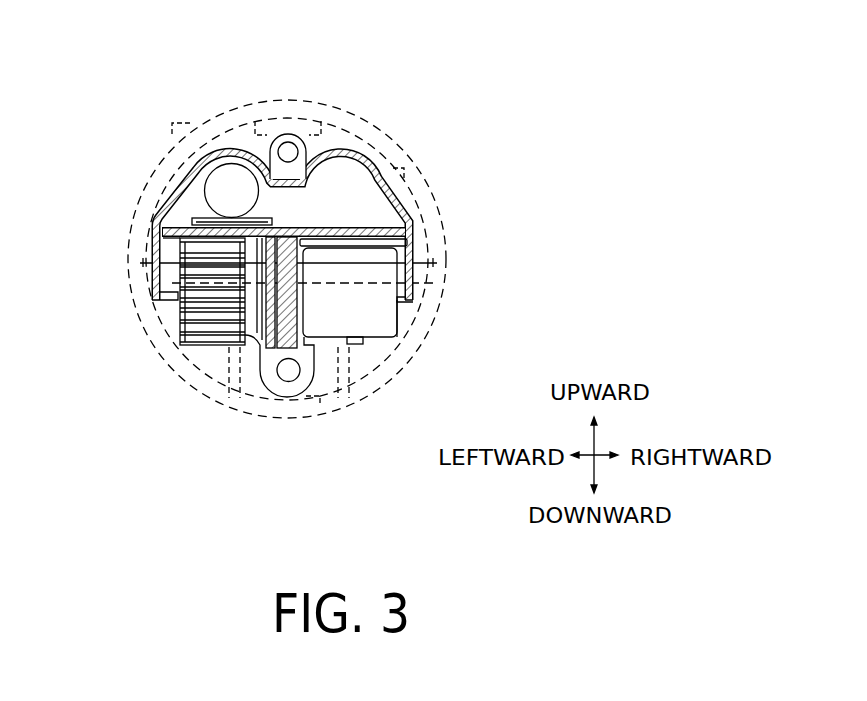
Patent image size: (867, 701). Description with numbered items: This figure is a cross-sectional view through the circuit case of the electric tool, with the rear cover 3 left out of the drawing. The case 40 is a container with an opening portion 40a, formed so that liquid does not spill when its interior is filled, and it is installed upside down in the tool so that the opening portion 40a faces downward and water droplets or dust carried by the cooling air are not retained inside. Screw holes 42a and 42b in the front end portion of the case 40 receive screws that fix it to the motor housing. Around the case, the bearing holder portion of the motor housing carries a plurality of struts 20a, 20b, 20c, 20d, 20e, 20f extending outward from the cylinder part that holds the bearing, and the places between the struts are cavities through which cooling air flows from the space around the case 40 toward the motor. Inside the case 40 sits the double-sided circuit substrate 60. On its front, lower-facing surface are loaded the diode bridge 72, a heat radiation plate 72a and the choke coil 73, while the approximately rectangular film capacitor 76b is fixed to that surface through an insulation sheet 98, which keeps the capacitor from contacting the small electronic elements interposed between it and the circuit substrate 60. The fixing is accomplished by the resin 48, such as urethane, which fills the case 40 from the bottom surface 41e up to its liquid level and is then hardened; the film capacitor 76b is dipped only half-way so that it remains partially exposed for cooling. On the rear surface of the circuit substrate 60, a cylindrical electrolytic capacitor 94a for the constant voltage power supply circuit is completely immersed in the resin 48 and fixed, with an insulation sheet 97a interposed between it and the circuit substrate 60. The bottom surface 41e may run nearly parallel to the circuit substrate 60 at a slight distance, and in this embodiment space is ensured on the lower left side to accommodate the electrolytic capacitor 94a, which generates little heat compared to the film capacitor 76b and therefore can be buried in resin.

The rear cover 3 is at (127, 287).
The strut 20a is at (270, 130).
The strut 20b is at (413, 178).
The strut 20c is at (365, 356).
The strut 20d is at (318, 398).
The strut 20e is at (227, 360).
The strut 20f is at (188, 163).
The case 40 is at (407, 193).
The opening portion 40a is at (167, 305).
The bottom surface 41e is at (342, 164).
The screw hole 42a is at (288, 142).
The screw hole 42b is at (287, 383).
The resin 48 is at (373, 285).
The circuit substrate 60 is at (401, 229).
The diode bridge 72 is at (268, 345).
The heat radiation plate 72a is at (284, 347).
The choke coil 73 is at (187, 320).
The film capacitor 76b is at (378, 323).
The electrolytic capacitor 94a is at (232, 178).
The insulation sheet 97a is at (197, 218).
The insulation sheet 98 is at (403, 243).